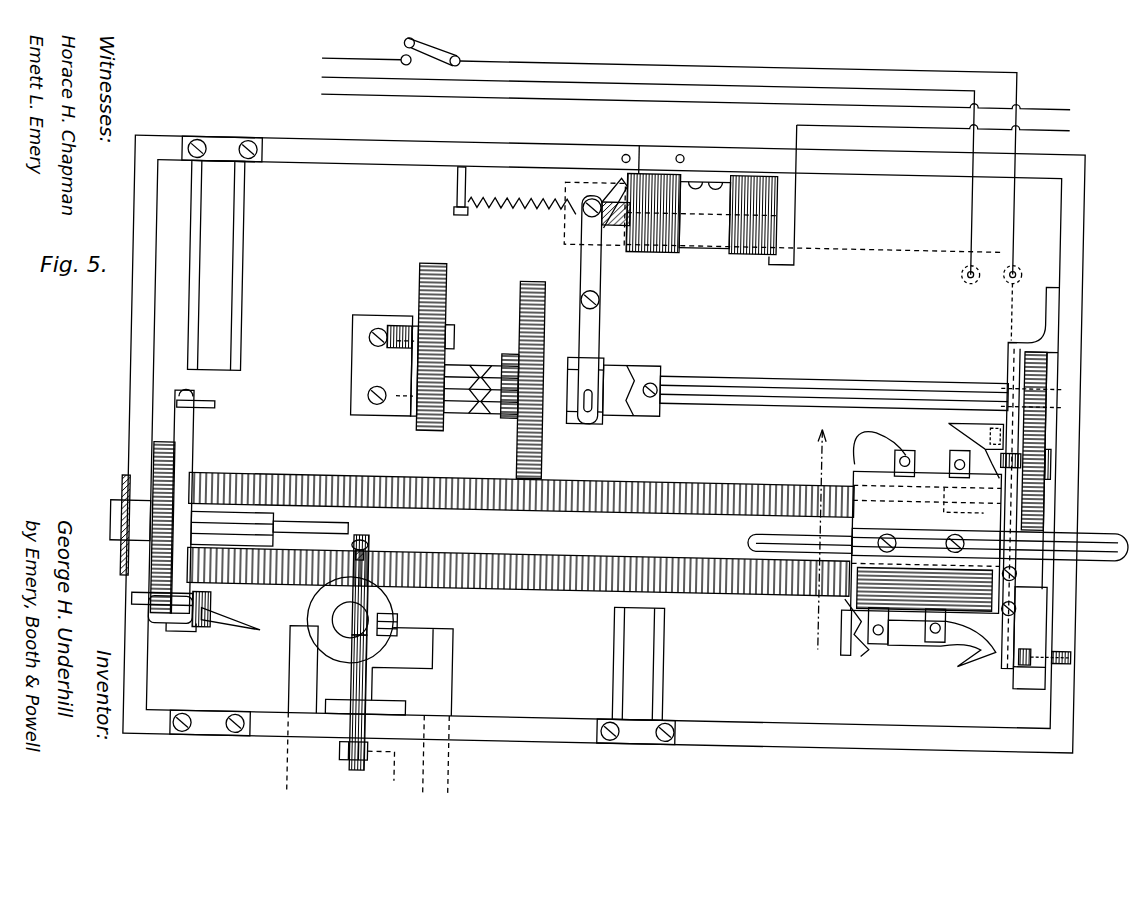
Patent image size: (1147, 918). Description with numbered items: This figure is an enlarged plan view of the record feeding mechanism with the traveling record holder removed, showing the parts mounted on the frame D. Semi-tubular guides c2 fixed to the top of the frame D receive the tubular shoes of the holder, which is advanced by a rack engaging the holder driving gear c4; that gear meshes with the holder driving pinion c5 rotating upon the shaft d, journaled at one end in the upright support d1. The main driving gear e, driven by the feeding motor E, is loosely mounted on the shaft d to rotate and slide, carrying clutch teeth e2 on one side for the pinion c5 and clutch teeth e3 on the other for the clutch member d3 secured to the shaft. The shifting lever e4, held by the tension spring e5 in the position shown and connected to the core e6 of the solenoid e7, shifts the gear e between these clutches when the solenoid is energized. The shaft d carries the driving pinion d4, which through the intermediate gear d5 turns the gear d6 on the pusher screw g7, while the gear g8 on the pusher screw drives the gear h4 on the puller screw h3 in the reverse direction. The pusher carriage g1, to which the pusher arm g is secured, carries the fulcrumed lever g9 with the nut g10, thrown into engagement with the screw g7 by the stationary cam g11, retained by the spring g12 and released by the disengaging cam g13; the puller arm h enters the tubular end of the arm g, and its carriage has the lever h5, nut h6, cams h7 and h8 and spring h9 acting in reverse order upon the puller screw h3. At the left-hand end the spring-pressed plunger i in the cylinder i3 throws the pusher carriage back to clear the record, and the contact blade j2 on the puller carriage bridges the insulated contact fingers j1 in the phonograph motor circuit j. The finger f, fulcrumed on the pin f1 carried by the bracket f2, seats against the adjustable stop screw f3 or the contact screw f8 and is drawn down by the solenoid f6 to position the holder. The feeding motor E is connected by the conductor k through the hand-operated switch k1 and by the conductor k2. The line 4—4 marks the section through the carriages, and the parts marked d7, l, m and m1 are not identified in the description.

The frame D is at (1079, 236).
The feeding motor E is at (603, 444).
The semi-tubular guides c2 is at (240, 266).
The holder driving gear c4 is at (416, 294).
The holder driving pinion c5 is at (420, 433).
The shaft d is at (800, 376).
The stationary upright support d1 is at (358, 380).
The clutch member d3 is at (660, 366).
The driving pinion d4 is at (1045, 380).
The intermediate gear d5 is at (1022, 452).
The gear d6 is at (1030, 520).
The shaft end d7 is at (1060, 390).
The main driving gear e is at (517, 300).
The clutch teeth e2 is at (492, 368).
The clutch teeth e3 is at (604, 368).
The shifting lever e4 is at (597, 300).
The tension spring e5 is at (490, 212).
The solenoid core e6 is at (604, 200).
The solenoid e7 is at (728, 252).
The finger f is at (397, 622).
The fulcruming pin f1 is at (352, 620).
The bracket f2 is at (437, 680).
The adjustable stop screw f3 is at (368, 548).
The solenoid f6 is at (401, 632).
The contact screw f8 is at (356, 694).
The pusher arm g is at (1067, 535).
The pusher carriage g1 is at (926, 542).
The pusher screw g7 is at (712, 490).
The gear g8 is at (154, 458).
The fulcrumed arm g9 is at (912, 448).
The nut g10 is at (966, 504).
The stationary cam g11 is at (975, 416).
The spring g12 is at (1000, 448).
The disengaging cam g13 is at (214, 418).
The puller arm h is at (758, 538).
The puller screw h3 is at (705, 592).
The gear h4 is at (150, 588).
The lever h5 is at (968, 654).
The nut h6 is at (885, 640).
The stationary cam h7 is at (235, 628).
The stationary cam h8 is at (1012, 656).
The spring h9 is at (862, 652).
The plunger i is at (311, 520).
The cylinder i3 is at (240, 520).
The phonograph motor circuit j is at (160, 608).
The contact fingers j1 is at (225, 640).
The contact blade j2 is at (845, 648).
The conductor k is at (693, 188).
The circuit closing device k1 is at (448, 62).
The conductor k2 is at (470, 84).
The wire l is at (816, 191).
The leader line m is at (455, 770).
The line m1 is at (302, 762).
The section line 4 is at (815, 535).